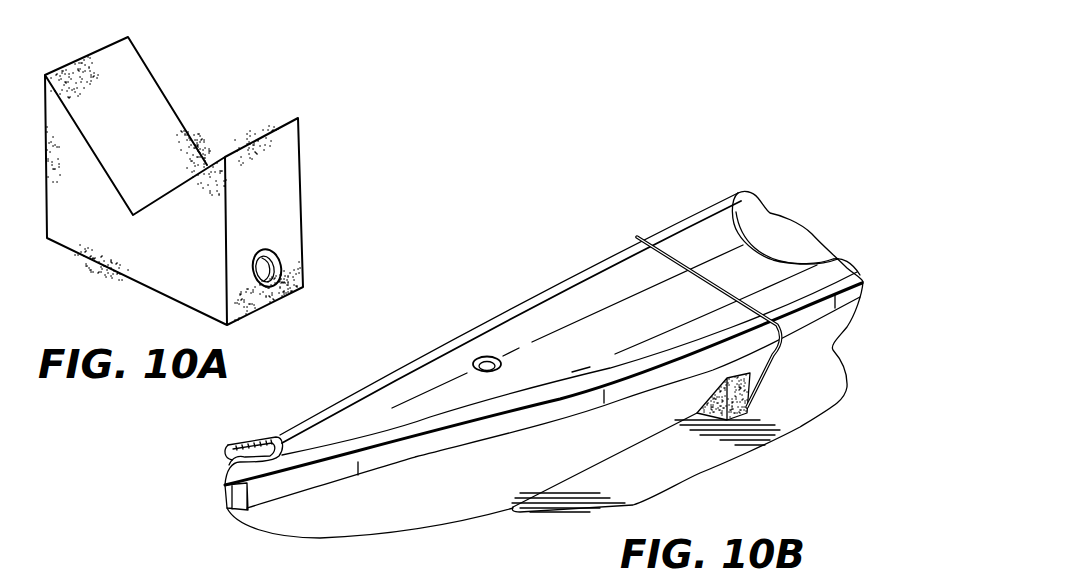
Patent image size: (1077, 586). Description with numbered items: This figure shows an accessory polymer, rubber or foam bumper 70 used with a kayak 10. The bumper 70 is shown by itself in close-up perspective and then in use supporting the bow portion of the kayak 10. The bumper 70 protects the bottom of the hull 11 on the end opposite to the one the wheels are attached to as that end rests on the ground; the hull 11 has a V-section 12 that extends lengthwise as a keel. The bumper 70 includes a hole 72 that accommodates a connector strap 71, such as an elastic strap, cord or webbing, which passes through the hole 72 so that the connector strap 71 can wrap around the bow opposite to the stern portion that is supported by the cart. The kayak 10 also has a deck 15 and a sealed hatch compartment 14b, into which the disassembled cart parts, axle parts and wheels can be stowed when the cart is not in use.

In FIG. 10B, the kayak 10 is at (585, 264).
In FIG. 10B, the hull 11 is at (808, 340).
In FIG. 10B, the V-section 12 is at (715, 397).
In FIG. 10B, the hatch compartment 14b is at (767, 212).
In FIG. 10B, the deck 15 is at (538, 305).
In FIG. 10A, the bumper 70 is at (198, 94).
In FIG. 10B, the bumper 70 is at (748, 403).
In FIG. 10B, the connector strap 71 is at (637, 237).
In FIG. 10A, the hole 72 is at (283, 267).